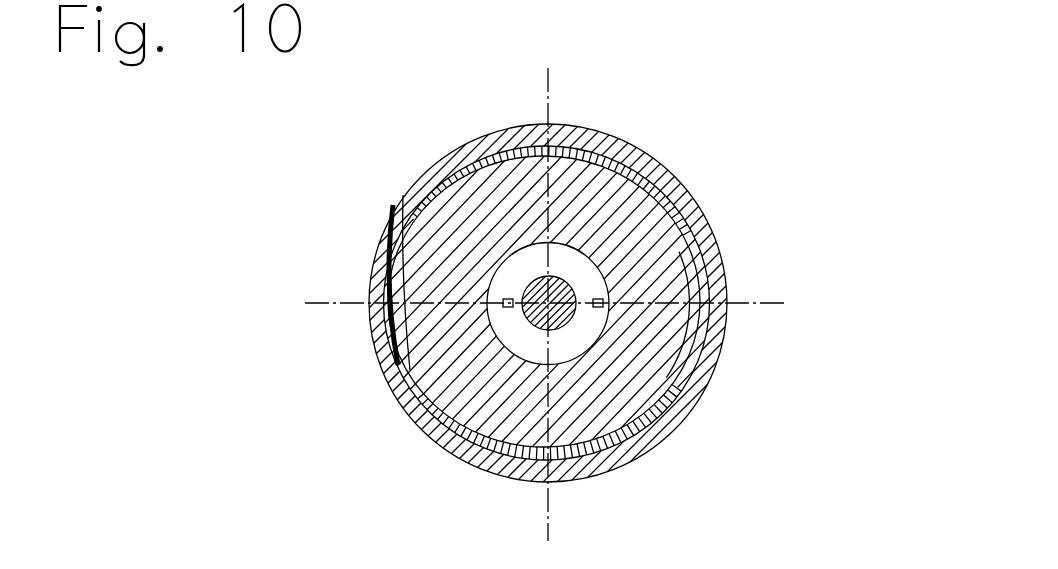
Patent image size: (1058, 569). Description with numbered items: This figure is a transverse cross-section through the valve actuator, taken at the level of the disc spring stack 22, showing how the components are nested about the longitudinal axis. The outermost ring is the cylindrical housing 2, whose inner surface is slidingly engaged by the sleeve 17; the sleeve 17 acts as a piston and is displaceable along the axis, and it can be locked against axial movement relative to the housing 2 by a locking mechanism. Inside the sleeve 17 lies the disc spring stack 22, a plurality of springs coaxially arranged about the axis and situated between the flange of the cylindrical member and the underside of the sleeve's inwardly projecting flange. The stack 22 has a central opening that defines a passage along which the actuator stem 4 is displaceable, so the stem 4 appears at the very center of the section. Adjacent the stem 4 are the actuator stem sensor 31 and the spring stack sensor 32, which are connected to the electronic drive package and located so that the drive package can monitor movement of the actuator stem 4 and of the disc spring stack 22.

The housing 2 is at (690, 201).
The actuator stem 4 is at (525, 314).
The sleeve 17 is at (698, 258).
The disc spring stack 22 is at (662, 290).
The actuator stem sensor 31 is at (504, 300).
The spring stack sensor 32 is at (592, 299).